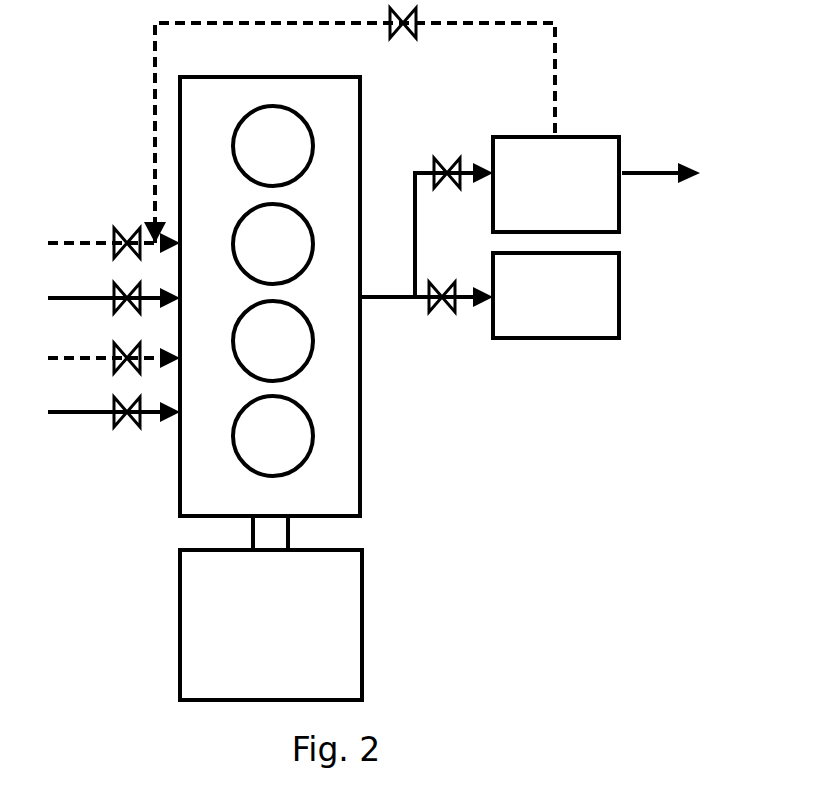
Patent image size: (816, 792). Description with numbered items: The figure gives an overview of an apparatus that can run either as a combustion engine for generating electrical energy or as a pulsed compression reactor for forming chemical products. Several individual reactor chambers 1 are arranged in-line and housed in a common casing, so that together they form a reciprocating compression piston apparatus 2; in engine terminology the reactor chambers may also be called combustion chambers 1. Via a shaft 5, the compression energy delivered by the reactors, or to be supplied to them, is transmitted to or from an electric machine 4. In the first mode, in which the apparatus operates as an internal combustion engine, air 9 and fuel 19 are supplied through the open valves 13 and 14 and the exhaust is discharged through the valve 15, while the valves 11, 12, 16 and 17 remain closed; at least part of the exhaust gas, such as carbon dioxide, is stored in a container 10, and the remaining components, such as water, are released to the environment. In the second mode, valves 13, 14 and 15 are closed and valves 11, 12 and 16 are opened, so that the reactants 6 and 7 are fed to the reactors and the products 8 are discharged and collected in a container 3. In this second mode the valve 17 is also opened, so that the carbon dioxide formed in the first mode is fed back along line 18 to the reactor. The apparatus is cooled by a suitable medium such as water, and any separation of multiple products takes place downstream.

The reactor chambers 1 is at (288, 146).
The reciprocating compression piston apparatus 2 is at (340, 494).
The container 3 is at (556, 295).
The electric machine 4 is at (312, 647).
The shaft 5 is at (282, 533).
The reactant 6 is at (114, 231).
The reactant 7 is at (114, 285).
The products 8 is at (426, 235).
The air 9 is at (114, 399).
The container 10 is at (596, 184).
The valve 11 is at (122, 229).
The valve 12 is at (122, 285).
The valve 13 is at (124, 343).
The valve 14 is at (124, 399).
The valve 15 is at (449, 155).
The valve 16 is at (444, 277).
The valve 17 is at (407, 50).
The recirculation line 18 is at (380, 133).
The fuel 19 is at (114, 345).